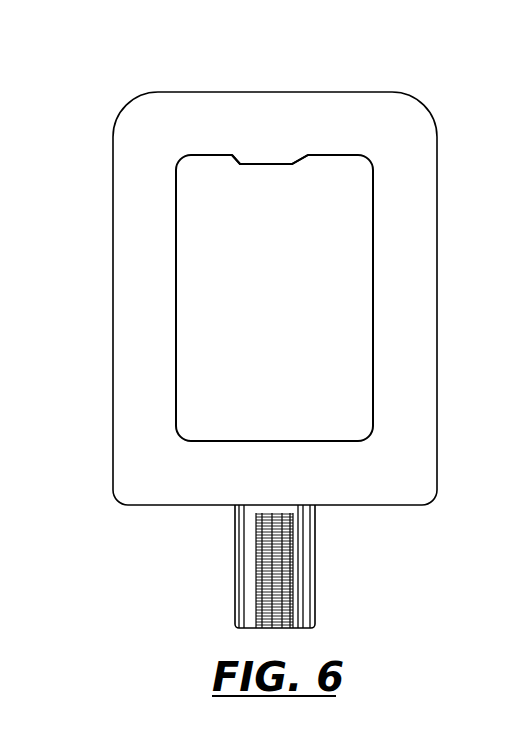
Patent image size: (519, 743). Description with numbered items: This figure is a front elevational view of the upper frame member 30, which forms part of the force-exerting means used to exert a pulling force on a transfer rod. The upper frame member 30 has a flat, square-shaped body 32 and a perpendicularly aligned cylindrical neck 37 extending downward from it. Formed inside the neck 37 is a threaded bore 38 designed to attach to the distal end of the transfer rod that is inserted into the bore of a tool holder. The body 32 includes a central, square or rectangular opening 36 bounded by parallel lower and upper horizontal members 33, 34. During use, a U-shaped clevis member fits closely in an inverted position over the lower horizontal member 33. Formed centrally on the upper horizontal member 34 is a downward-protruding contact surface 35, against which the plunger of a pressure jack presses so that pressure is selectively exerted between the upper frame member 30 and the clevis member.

The upper frame member 30 is at (334, 68).
The body 32 is at (100, 133).
The lower horizontal member 33 is at (383, 468).
The upper horizontal member 34 is at (380, 136).
The contact surface 35 is at (289, 165).
The opening 36 is at (305, 310).
The neck 37 is at (315, 530).
The threaded bore 38 is at (285, 581).